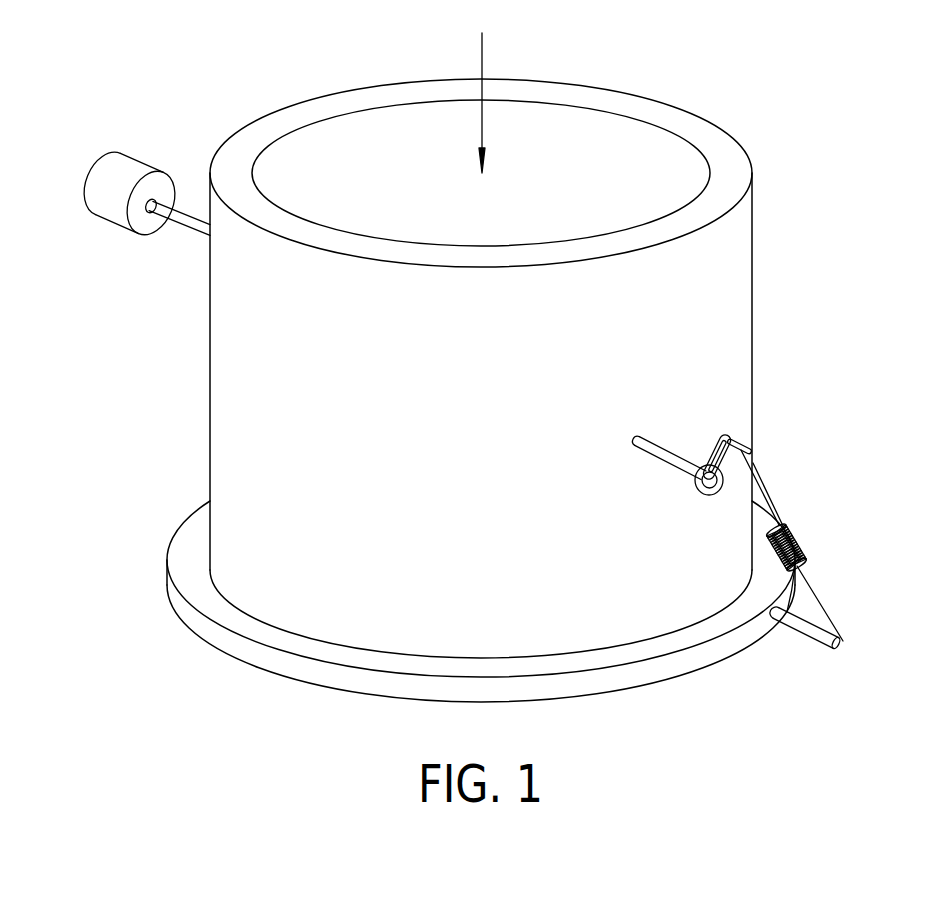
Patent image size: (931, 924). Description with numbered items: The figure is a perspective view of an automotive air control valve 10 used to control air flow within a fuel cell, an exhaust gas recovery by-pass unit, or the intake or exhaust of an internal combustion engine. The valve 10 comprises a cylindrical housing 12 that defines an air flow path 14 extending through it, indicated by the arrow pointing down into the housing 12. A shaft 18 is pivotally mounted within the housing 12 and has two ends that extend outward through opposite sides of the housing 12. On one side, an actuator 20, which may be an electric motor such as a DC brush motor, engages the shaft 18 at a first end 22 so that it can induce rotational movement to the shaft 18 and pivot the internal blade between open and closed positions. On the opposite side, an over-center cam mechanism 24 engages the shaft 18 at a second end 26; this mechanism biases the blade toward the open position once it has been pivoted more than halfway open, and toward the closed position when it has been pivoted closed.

The automotive air control valve 10 is at (208, 718).
The housing 12 is at (728, 281).
The air flow path 14 is at (483, 57).
The shaft 18 is at (190, 231).
The actuator 20 is at (88, 175).
The first end 22 is at (156, 214).
The over-center cam mechanism 24 is at (757, 423).
The second end 26 is at (694, 483).